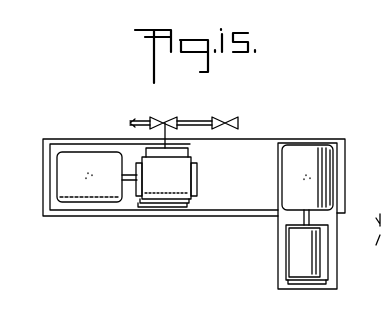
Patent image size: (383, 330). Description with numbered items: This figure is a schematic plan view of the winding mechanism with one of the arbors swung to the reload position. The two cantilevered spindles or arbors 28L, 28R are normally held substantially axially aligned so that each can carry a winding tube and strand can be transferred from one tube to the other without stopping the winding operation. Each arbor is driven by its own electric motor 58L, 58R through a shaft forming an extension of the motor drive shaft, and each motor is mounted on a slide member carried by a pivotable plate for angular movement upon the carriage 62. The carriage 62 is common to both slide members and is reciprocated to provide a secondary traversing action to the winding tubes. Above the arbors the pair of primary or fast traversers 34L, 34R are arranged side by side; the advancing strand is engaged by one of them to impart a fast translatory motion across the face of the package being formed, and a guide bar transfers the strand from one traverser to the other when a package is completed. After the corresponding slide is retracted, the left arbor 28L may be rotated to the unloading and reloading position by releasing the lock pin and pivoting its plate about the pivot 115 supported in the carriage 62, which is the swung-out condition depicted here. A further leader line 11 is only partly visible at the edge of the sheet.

The carriage 62 is at (266, 139).
The electric motor 58L is at (86, 163).
The electric motor 58R is at (313, 155).
The arbor 28L is at (198, 172).
The arbor 28R is at (283, 284).
The fast traverser 34L is at (170, 111).
The fast traverser 34R is at (238, 120).
The pivot 115 is at (90, 176).
The partial numeral (cut off) 11 is at (310, 176).